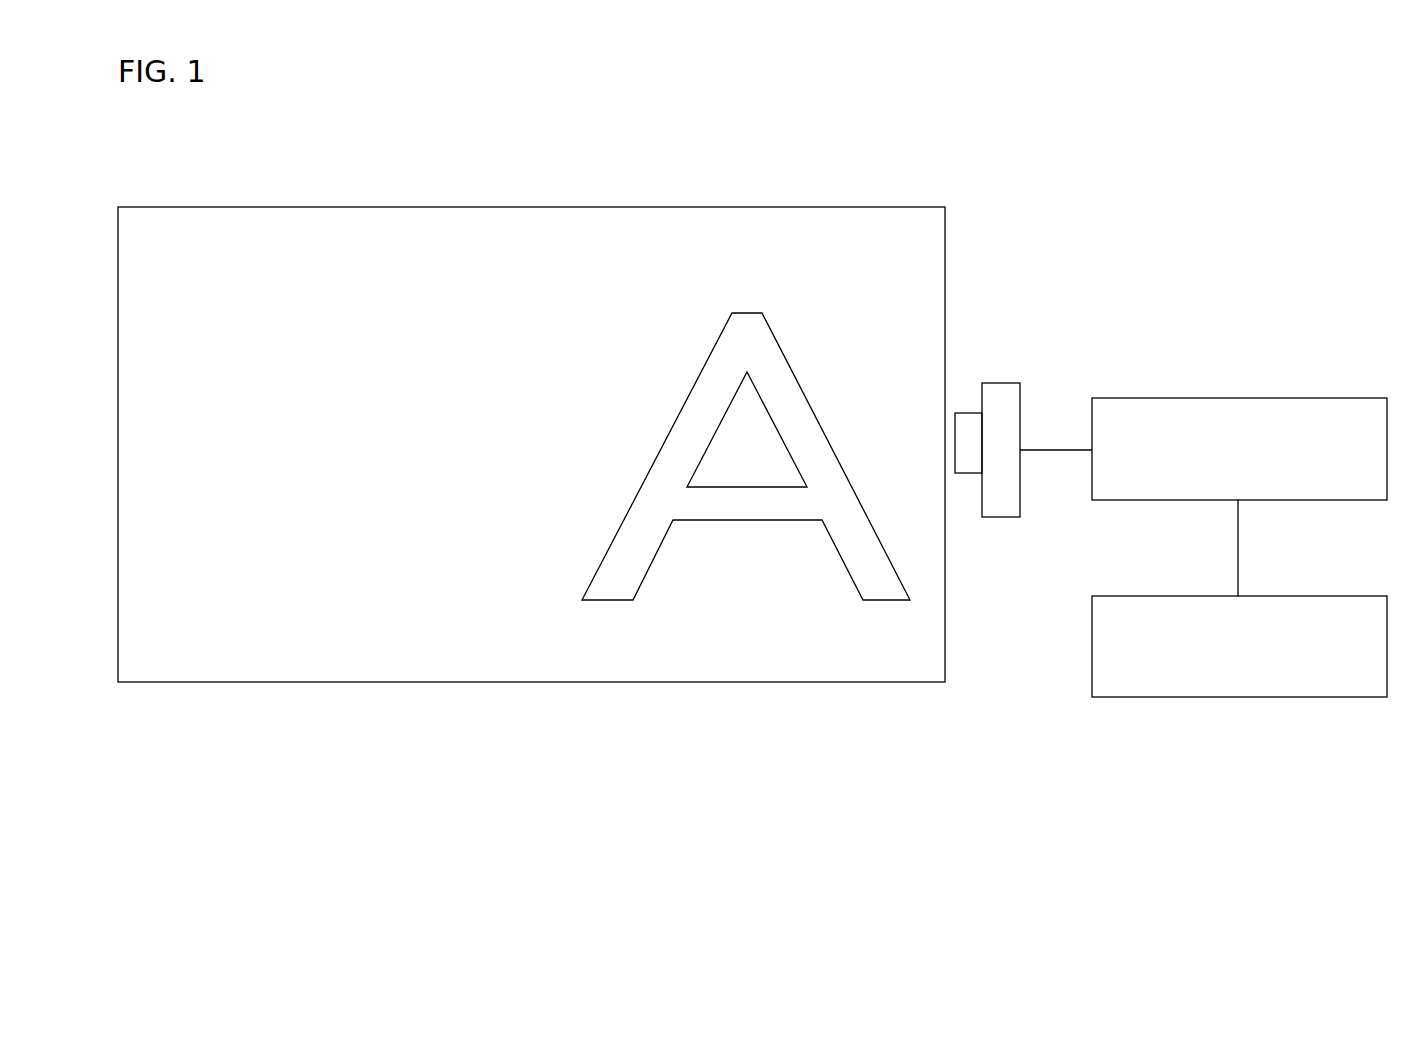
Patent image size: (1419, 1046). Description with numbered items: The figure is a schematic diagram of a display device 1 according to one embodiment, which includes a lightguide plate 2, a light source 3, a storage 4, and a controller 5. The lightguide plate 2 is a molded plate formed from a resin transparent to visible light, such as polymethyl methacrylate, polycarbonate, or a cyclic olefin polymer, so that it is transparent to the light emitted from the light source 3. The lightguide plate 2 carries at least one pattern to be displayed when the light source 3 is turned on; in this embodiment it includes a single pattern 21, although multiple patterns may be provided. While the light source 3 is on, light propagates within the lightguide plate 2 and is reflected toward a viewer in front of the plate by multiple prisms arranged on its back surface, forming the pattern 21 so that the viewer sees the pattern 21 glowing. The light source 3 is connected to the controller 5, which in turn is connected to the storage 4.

The display device 1 is at (1040, 833).
The lightguide plate 2 is at (766, 682).
The pattern 21 is at (813, 403).
The light source 3 is at (1001, 382).
The storage 4 is at (1240, 697).
The controller 5 is at (1243, 398).